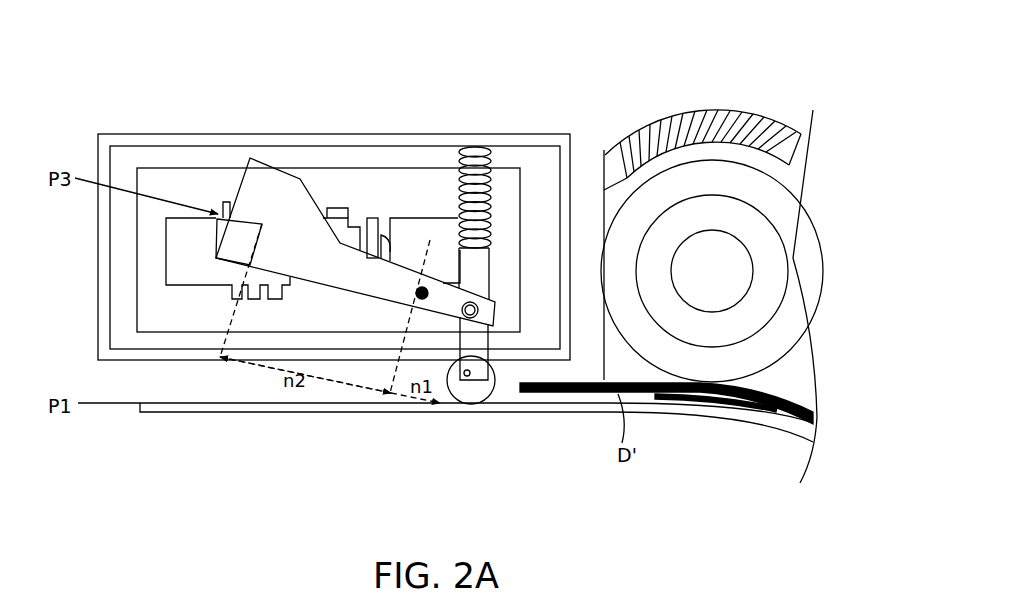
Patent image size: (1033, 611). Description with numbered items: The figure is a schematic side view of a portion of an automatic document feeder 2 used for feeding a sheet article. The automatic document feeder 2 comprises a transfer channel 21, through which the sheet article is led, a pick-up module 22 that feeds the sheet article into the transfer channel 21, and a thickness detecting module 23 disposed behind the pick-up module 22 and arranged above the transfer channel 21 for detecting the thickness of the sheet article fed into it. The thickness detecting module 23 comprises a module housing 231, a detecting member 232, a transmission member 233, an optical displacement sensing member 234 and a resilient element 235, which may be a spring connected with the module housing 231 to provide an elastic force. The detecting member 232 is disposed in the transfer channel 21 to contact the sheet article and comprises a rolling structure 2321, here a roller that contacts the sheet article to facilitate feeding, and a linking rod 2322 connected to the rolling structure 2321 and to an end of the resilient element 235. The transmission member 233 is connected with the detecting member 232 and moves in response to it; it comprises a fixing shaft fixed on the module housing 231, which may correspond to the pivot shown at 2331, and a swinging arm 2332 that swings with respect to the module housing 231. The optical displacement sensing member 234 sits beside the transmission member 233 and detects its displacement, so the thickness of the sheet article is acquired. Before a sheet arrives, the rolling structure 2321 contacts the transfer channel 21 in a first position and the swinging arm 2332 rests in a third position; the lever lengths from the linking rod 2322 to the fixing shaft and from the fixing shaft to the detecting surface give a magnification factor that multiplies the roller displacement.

The automatic document feeder 2 is at (648, 72).
The transfer channel 21 is at (642, 399).
The pick-up module 22 is at (723, 185).
The thickness detecting module 23 is at (504, 163).
The module housing 231 is at (162, 138).
The detecting member 232 is at (470, 399).
The rolling structure 2321 is at (463, 392).
The linking rod 2322 is at (483, 353).
The transmission member 233 is at (341, 259).
The pivot 2331 is at (424, 288).
The swinging arm 2332 is at (267, 175).
The optical displacement sensing member 234 is at (370, 214).
The resilient element 235 is at (483, 152).